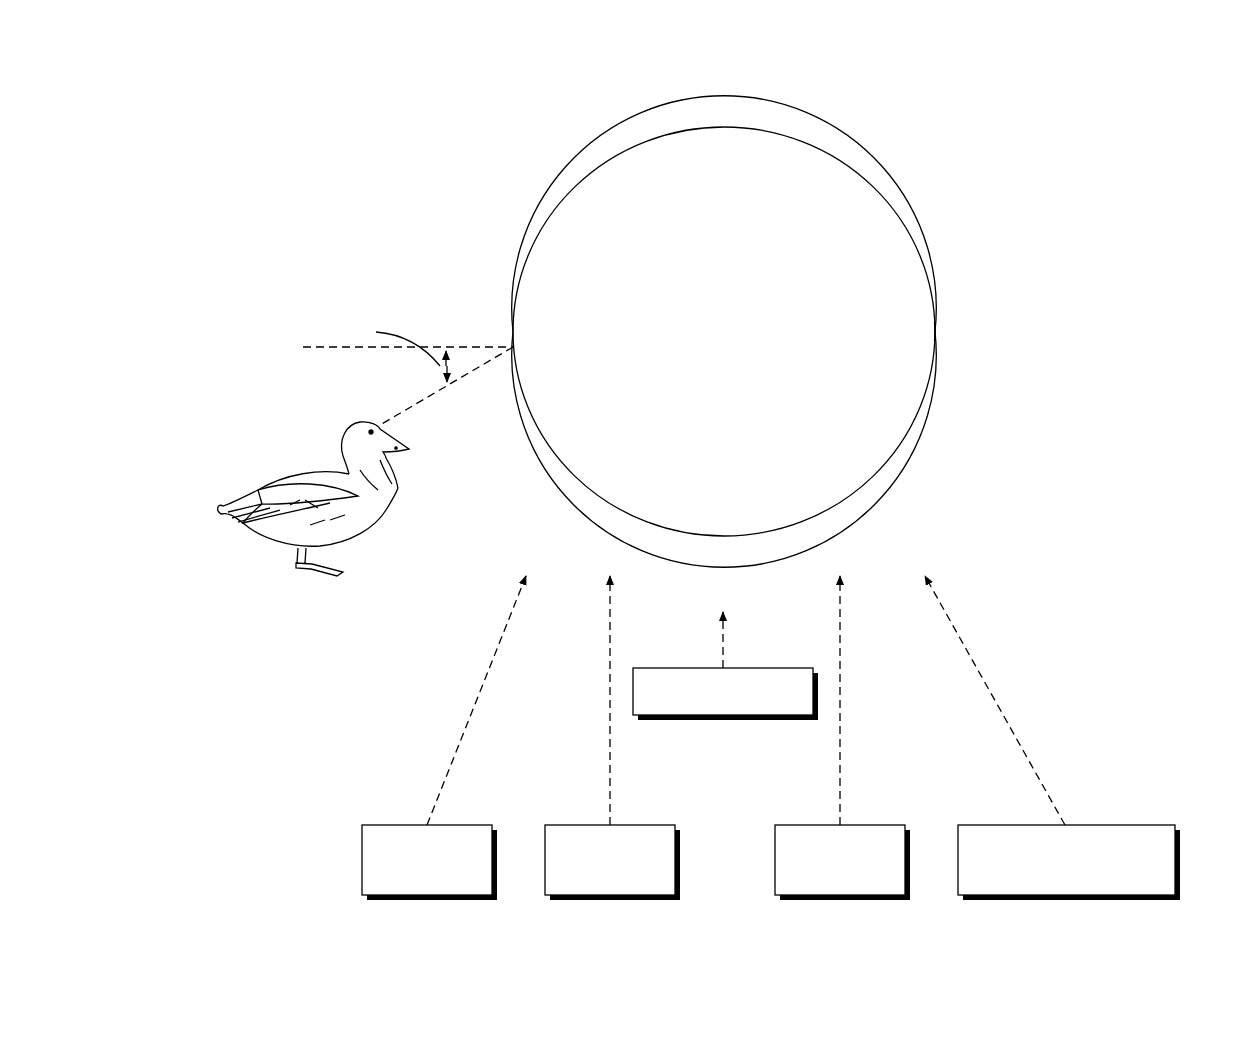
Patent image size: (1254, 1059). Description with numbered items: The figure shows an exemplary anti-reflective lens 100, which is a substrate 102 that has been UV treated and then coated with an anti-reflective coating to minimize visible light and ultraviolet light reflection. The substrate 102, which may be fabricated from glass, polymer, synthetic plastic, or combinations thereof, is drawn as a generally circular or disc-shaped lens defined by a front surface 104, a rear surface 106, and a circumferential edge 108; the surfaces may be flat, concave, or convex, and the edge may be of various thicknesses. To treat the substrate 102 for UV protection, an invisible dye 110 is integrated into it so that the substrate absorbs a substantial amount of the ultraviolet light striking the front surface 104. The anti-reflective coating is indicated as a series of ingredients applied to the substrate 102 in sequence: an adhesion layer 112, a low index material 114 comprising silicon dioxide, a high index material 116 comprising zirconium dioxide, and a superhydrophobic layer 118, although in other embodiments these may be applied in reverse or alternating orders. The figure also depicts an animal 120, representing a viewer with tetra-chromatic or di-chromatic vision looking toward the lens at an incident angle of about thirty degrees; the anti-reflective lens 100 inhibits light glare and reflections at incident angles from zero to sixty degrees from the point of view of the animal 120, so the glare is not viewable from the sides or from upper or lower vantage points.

The anti-reflective lens 100 is at (244, 94).
The substrate 102 is at (931, 470).
The front surface 104 is at (924, 338).
The rear surface 106 is at (876, 163).
The circumferential edge 108 is at (823, 138).
The invisible dye 110 is at (688, 668).
The adhesion layer 112 is at (390, 825).
The low index material 114 is at (574, 825).
The high index material 116 is at (800, 825).
The superhydrophobic layer 118 is at (985, 825).
The animal 120 is at (362, 424).